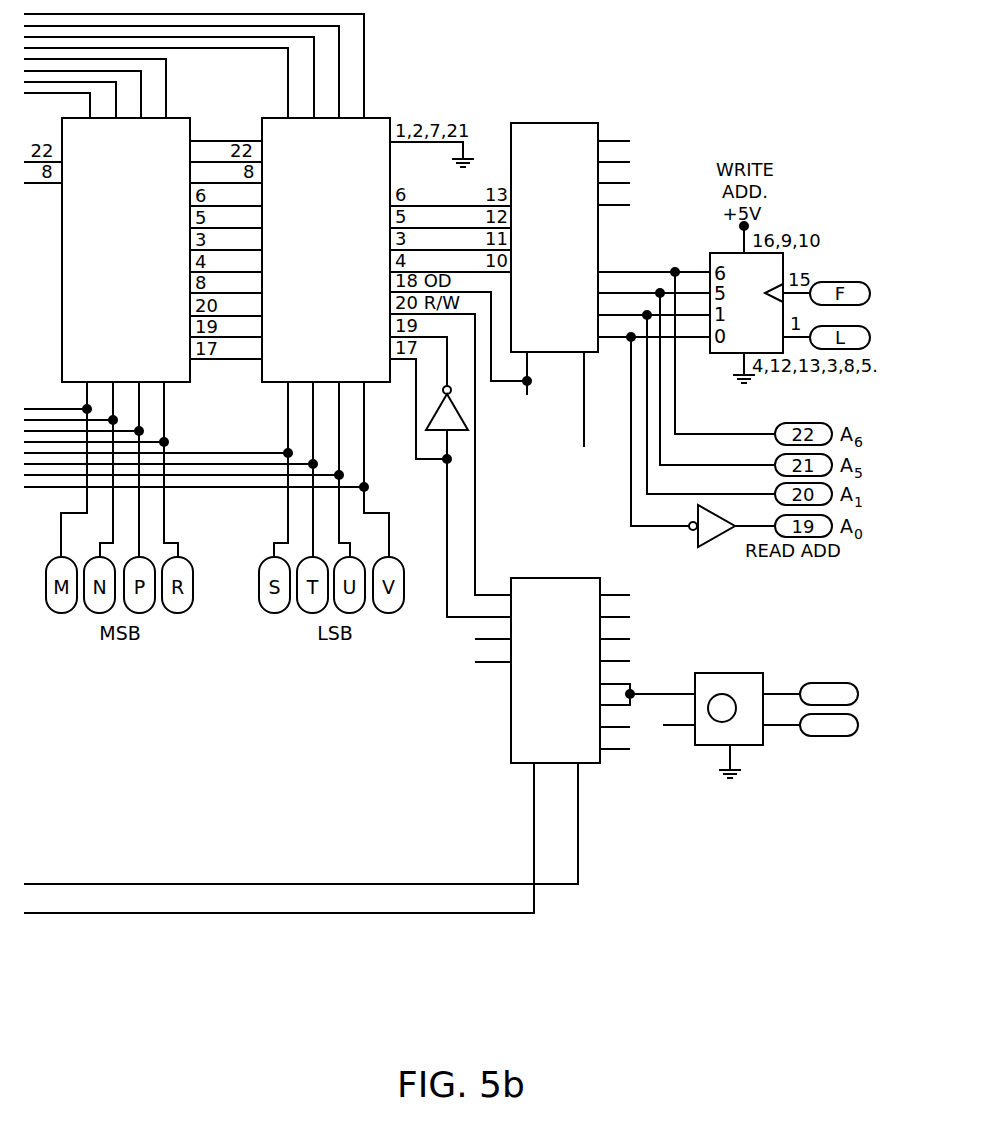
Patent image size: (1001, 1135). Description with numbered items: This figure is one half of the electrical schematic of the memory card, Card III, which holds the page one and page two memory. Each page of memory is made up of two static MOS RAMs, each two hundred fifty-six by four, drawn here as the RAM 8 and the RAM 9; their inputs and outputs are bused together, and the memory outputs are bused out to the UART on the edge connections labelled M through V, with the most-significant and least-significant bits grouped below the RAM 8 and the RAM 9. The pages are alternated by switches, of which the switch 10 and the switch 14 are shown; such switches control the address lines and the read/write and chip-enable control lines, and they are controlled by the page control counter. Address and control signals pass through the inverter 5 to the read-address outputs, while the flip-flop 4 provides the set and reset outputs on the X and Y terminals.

The static MOS RAM 8 is at (125, 250).
The static MOS RAM 9 is at (325, 250).
The switch IC 10 is at (599, 303).
The switch IC 14 is at (373, 743).
The inverter 5 is at (597, 499).
The set-reset flip-flop 4 is at (760, 724).